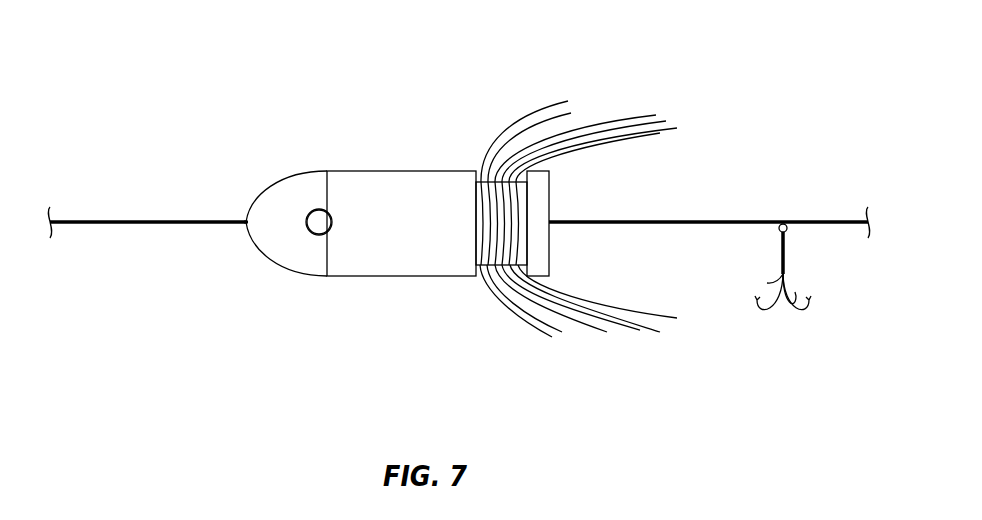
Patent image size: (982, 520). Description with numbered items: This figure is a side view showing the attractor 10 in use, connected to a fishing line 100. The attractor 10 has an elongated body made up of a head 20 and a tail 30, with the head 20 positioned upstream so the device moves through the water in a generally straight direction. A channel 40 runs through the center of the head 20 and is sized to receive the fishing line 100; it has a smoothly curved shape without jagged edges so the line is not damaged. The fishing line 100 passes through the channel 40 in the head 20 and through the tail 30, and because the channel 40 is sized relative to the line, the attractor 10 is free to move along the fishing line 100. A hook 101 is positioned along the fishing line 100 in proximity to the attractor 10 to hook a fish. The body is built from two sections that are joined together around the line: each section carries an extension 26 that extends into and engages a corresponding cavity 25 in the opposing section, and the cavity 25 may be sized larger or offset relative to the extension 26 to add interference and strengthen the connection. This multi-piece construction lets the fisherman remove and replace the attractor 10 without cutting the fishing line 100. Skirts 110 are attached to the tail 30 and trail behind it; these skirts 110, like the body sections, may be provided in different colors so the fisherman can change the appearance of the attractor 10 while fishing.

The attractor 10 is at (454, 69).
The head 20 is at (318, 250).
The cavity 25 is at (328, 232).
The extension 26 is at (319, 215).
The tail 30 is at (502, 210).
The channel 40 is at (245, 221).
The fishing line 100 is at (163, 218).
The hooks 101 is at (773, 318).
The skirts 110 is at (603, 112).